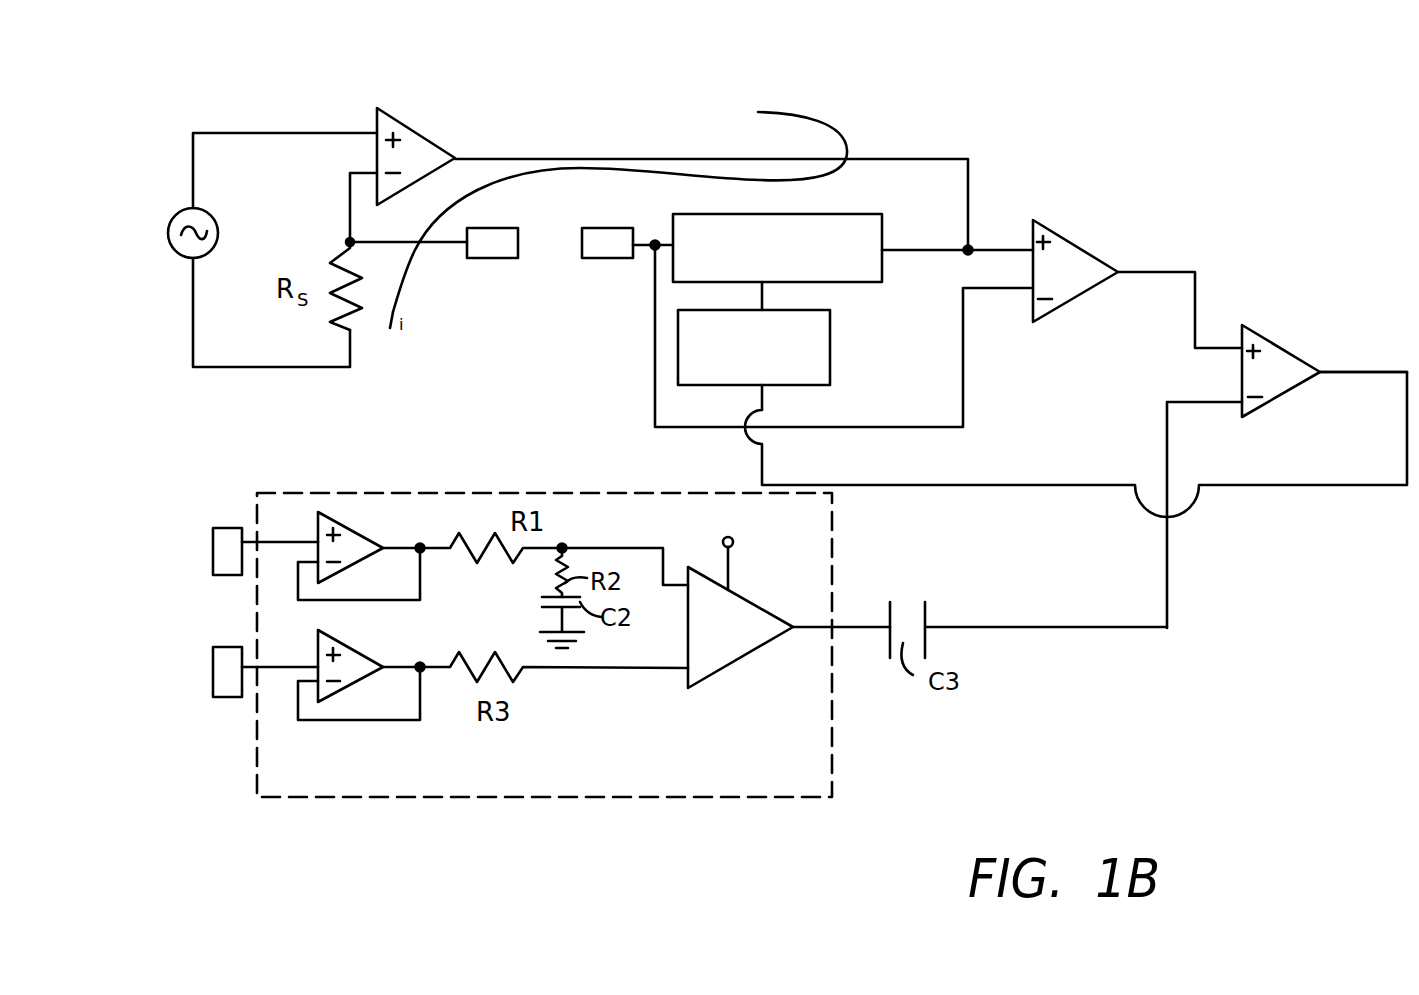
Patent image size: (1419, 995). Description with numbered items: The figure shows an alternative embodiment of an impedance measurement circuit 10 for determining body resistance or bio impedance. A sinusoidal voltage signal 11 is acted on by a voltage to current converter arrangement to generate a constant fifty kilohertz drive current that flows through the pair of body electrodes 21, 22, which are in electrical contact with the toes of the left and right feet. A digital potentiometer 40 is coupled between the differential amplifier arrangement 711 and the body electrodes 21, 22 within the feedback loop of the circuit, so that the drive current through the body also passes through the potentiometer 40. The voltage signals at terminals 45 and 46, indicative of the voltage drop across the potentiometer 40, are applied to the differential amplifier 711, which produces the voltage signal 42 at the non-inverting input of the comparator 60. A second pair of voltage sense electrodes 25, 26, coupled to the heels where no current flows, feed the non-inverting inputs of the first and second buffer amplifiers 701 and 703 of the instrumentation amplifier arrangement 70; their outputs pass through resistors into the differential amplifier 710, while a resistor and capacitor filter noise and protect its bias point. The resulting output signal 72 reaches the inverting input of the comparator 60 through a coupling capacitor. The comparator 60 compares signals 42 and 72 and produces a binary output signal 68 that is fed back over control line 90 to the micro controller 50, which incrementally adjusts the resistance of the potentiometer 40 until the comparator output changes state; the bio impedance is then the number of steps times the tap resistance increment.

The impedance measurement circuit 10 is at (1247, 102).
The sinusoidal voltage signal 11 is at (172, 228).
The body electrode 21 is at (505, 258).
The body electrode 22 is at (607, 258).
The voltage sense electrode 25 is at (213, 542).
The voltage sense electrode 26 is at (203, 678).
The digital potentiometer 40 is at (783, 213).
The voltage signal 42 is at (1197, 303).
The terminal 45 is at (668, 240).
The terminal 46 is at (895, 248).
The micro controller 50 is at (845, 345).
The comparator 60 is at (1280, 345).
The output signal 68 is at (1335, 375).
The differential amplifier arrangement 70 is at (753, 798).
The output signal 72 is at (1163, 440).
The control line 90 is at (985, 483).
The first buffer amplifier 701 is at (357, 529).
The second buffer amplifier 703 is at (355, 645).
The differential amplifier 710 is at (747, 598).
The differential amplifier arrangement 711 is at (1083, 252).